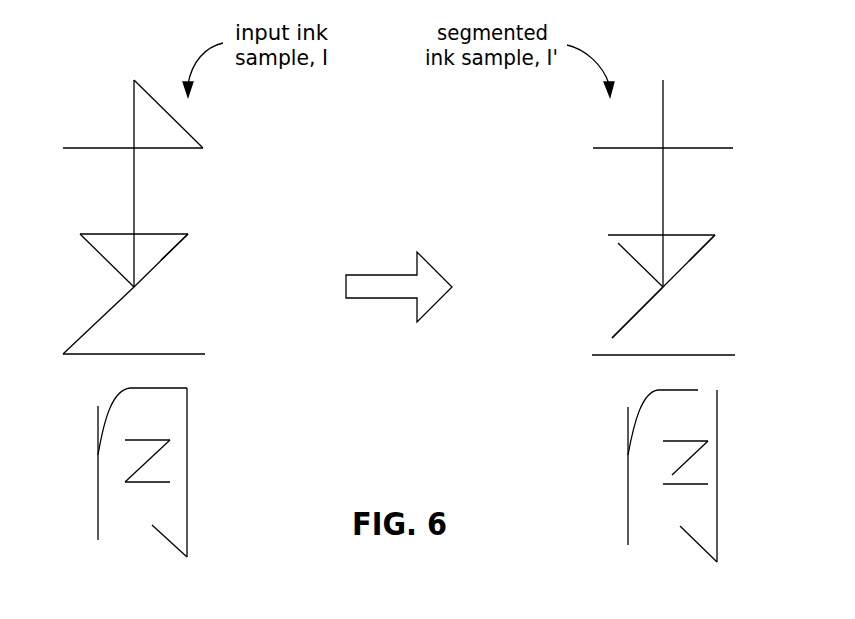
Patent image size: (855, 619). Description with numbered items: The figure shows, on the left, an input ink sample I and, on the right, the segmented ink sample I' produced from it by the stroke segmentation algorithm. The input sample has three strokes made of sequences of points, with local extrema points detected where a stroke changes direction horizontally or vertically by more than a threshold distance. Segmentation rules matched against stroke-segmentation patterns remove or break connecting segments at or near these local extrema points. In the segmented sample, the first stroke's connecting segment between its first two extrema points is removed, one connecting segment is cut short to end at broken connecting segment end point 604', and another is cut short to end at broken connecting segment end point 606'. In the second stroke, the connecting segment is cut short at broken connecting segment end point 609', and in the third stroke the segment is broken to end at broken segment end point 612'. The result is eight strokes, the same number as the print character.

The broken connecting segment end point 604' is at (617, 262).
The broken connecting segment end point 606' is at (614, 317).
The broken connecting segment end point 609' is at (671, 407).
The broken segment end point 612' is at (670, 460).